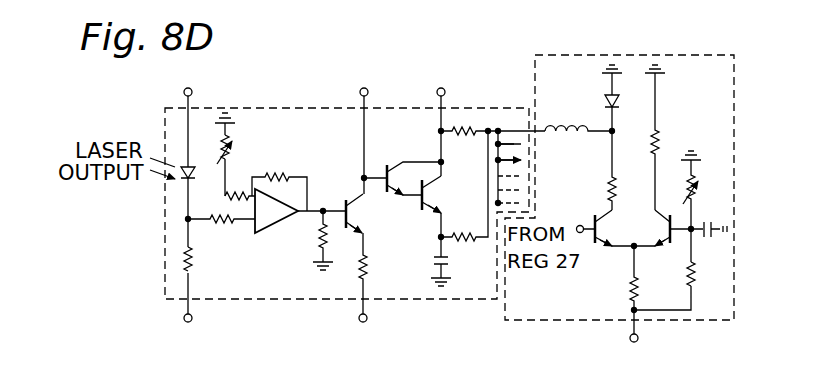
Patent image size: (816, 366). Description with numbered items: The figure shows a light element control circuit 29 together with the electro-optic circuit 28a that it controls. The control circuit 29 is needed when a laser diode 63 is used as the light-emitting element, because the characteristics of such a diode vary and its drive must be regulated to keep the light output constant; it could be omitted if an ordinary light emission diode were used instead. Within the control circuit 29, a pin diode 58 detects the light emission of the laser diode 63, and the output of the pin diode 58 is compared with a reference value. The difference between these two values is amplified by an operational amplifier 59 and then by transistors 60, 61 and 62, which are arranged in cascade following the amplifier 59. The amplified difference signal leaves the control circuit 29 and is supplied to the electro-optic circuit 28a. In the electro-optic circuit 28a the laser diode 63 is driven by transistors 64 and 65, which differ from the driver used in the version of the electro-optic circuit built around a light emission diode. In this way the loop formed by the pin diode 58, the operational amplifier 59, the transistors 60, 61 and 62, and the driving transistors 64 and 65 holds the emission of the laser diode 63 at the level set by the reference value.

The light element control circuit 29 is at (298, 108).
The electro-optic circuit 28a is at (625, 56).
The pin diode 58 is at (200, 173).
The operational amplifier 59 is at (270, 226).
The transistor 60 is at (364, 212).
The transistor 61 is at (394, 170).
The transistor 62 is at (431, 190).
The laser diode 63 is at (619, 101).
The transistor 64 is at (612, 233).
The transistor 65 is at (646, 213).